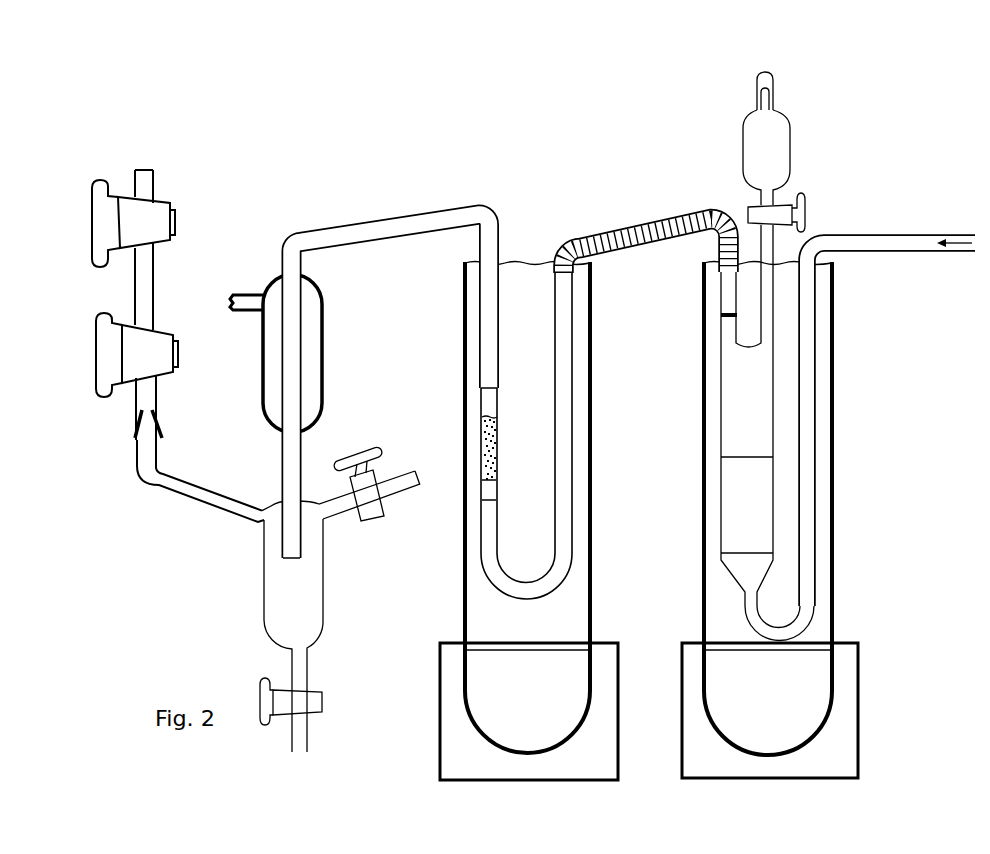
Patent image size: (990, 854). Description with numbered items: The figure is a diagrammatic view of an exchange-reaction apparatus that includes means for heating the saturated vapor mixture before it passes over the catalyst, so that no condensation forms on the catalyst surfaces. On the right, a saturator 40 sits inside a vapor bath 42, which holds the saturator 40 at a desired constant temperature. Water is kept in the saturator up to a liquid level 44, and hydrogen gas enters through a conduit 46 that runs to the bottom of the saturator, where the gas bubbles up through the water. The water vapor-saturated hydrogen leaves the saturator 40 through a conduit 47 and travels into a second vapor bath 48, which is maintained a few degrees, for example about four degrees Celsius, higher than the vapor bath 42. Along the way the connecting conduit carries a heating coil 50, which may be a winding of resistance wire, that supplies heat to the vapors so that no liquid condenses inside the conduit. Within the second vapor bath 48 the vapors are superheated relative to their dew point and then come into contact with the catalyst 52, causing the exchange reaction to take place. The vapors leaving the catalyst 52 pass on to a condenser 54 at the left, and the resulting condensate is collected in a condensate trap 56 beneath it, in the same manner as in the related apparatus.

The saturator 40 is at (763, 407).
The vapor bath 42 is at (820, 417).
The liquid level 44 is at (758, 457).
The conduit 46 is at (805, 310).
The conduit 47 is at (725, 300).
The second vapor bath 48 is at (583, 448).
The heating coil 50 is at (648, 216).
The catalyst 52 is at (438, 424).
The condenser 54 is at (312, 333).
The condensate trap 56 is at (310, 582).